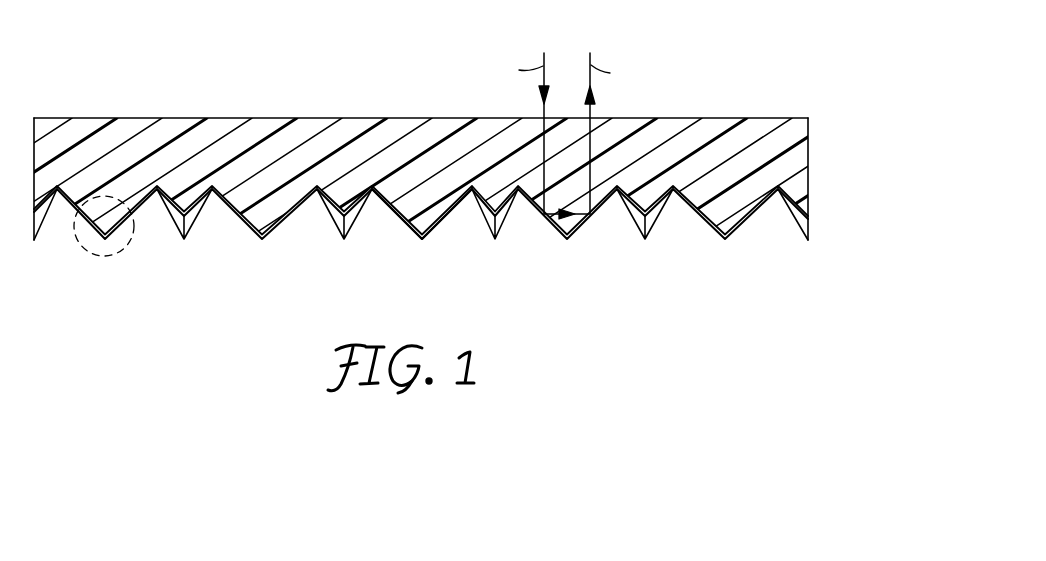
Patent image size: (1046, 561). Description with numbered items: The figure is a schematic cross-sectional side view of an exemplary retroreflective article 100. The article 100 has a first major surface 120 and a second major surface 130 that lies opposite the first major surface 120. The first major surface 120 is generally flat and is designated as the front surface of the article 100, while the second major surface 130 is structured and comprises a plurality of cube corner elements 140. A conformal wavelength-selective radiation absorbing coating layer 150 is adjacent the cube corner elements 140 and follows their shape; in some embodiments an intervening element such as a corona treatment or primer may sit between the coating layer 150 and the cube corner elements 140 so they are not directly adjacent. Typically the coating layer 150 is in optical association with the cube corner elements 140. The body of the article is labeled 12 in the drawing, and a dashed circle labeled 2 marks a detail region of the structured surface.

The retroreflective article 100 is at (463, 159).
The substrate / body layer 12 is at (717, 135).
The first major surface 120 is at (412, 118).
The second major surface 130 is at (790, 216).
The cube corner elements 140 is at (266, 214).
The conformal wavelength-selective radiation absorbing coating layer 150 is at (442, 224).
The detail region shown in FIG. 2 is at (118, 255).